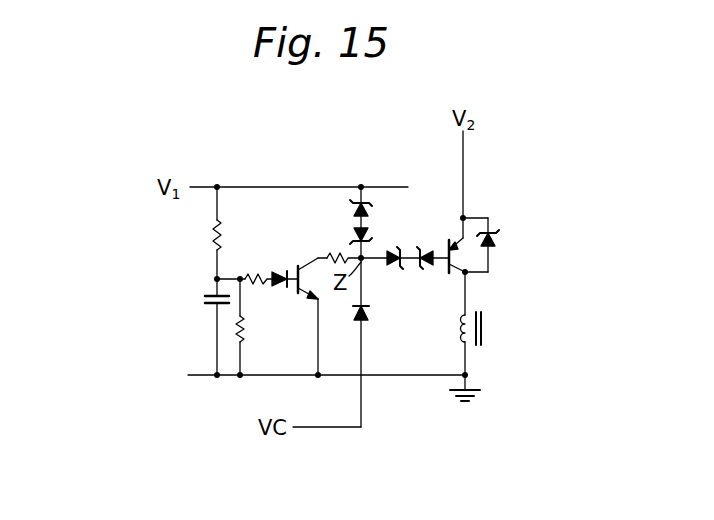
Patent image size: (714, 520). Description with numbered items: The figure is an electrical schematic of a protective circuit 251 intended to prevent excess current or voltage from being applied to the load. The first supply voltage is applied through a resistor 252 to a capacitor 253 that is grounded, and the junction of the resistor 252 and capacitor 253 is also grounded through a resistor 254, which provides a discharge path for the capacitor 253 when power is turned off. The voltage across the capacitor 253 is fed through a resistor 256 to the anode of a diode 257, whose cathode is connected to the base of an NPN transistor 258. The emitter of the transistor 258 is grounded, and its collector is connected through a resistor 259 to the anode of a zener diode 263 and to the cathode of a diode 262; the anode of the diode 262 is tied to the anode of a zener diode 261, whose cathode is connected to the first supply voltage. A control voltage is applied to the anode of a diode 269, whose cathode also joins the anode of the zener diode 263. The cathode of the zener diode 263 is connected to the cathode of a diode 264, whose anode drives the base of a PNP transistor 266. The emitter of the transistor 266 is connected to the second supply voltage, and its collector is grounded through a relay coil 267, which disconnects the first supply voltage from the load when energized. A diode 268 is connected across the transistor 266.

The circuit 251 is at (158, 338).
The resistor 252 is at (212, 232).
The capacitor 253 is at (208, 300).
The resistor 254 is at (246, 330).
The resistor 256 is at (250, 272).
The diode 257 is at (283, 272).
The NPN transistor 258 is at (312, 300).
The resistor 259 is at (337, 255).
The zener diode 261 is at (371, 209).
The diode 262 is at (371, 234).
The zener diode 263 is at (393, 266).
The diode 264 is at (429, 266).
The PNP transistor 266 is at (453, 253).
The relay coil 267 is at (484, 330).
The diode 268 is at (497, 233).
The diode 269 is at (360, 321).